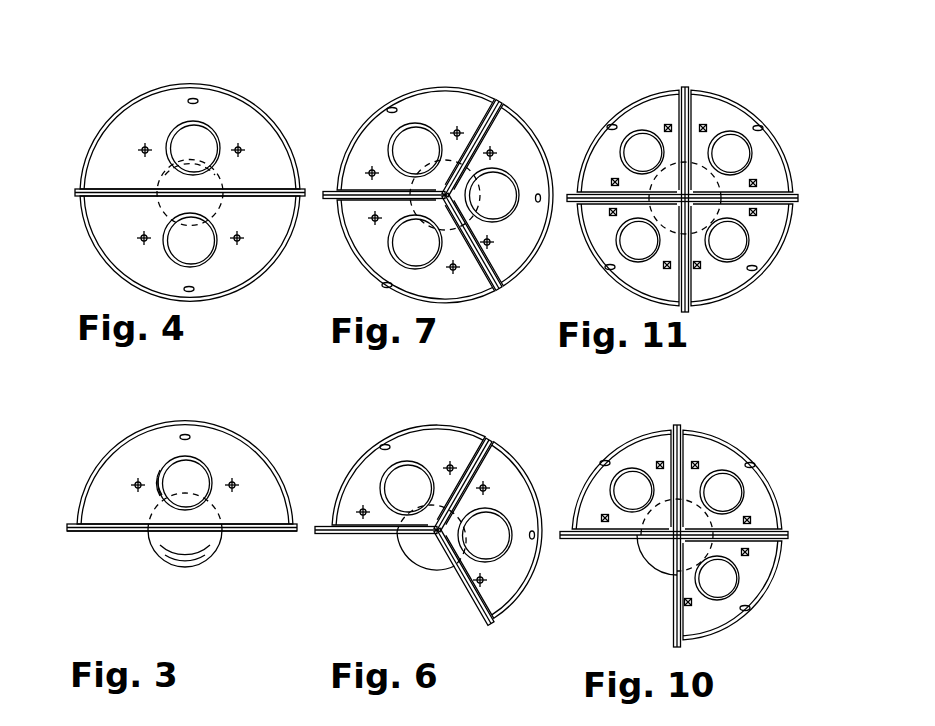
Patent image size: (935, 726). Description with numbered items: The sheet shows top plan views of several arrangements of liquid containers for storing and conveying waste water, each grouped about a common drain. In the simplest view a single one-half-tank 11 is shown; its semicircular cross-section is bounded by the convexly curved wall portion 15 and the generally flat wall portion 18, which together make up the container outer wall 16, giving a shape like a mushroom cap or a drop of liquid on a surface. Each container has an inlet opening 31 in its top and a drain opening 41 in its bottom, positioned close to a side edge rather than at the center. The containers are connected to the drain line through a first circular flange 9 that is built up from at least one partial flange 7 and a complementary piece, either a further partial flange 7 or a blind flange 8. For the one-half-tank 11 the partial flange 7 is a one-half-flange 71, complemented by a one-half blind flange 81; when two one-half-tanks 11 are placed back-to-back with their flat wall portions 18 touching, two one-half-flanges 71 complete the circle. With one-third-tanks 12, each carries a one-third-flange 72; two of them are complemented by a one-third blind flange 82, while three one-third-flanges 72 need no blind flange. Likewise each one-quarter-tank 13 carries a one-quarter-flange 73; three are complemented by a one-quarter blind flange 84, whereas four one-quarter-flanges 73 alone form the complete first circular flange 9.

In FIG. 3, the partial flange 7 is at (162, 480).
In FIG. 3, the blind flange 8 is at (198, 599).
In FIG. 4, the first circular flange 9 is at (188, 182).
In FIG. 3, the first circular flange 9 is at (163, 563).
In FIG. 4, the one-half-tank 11 is at (201, 178).
In FIG. 3, the one-half-tank 11 is at (162, 432).
In FIG. 7, the one-third-tank 12 is at (456, 190).
In FIG. 6, the one-third-tank 12 is at (446, 528).
In FIG. 11, the one-quarter-tank 13 is at (698, 200).
In FIG. 10, the one-quarter-tank 13 is at (695, 511).
In FIG. 4, the convexly curved wall portion 15 is at (140, 96).
In FIG. 3, the convexly curved wall portion 15 is at (197, 422).
In FIG. 7, the convexly curved wall portion 15 is at (378, 105).
In FIG. 6, the convexly curved wall portion 15 is at (398, 428).
In FIG. 11, the convexly curved wall portion 15 is at (727, 303).
In FIG. 10, the convexly curved wall portion 15 is at (627, 448).
In FIG. 4, the container outer wall 16 is at (264, 166).
In FIG. 3, the container outer wall 16 is at (277, 573).
In FIG. 7, the container outer wall 16 is at (537, 118).
In FIG. 6, the container outer wall 16 is at (493, 655).
In FIG. 11, the container outer wall 16 is at (760, 192).
In FIG. 10, the container outer wall 16 is at (823, 515).
In FIG. 3, the flat wall portion 18 is at (182, 572).
In FIG. 4, the inlet opening 31 is at (190, 146).
In FIG. 3, the inlet opening 31 is at (197, 475).
In FIG. 7, the inlet opening 31 is at (502, 189).
In FIG. 6, the inlet opening 31 is at (495, 538).
In FIG. 4, the drain opening 41 is at (162, 207).
In FIG. 3, the drain opening 41 is at (182, 527).
In FIG. 7, the drain opening 41 is at (438, 177).
In FIG. 6, the drain opening 41 is at (460, 523).
In FIG. 11, the drain opening 41 is at (713, 173).
In FIG. 10, the drain opening 41 is at (653, 527).
In FIG. 4, the one-half-flange 71 is at (213, 196).
In FIG. 3, the one-half-flange 71 is at (133, 448).
In FIG. 7, the one-third-flange 72 is at (438, 185).
In FIG. 6, the one-third-flange 72 is at (445, 500).
In FIG. 11, the one-quarter-flange 73 is at (655, 183).
In FIG. 10, the one-quarter-flange 73 is at (660, 505).
In FIG. 3, the one-half blind flange 81 is at (193, 547).
In FIG. 6, the one-third blind flange 82 is at (418, 553).
In FIG. 10, the one-quarter blind flange 84 is at (657, 560).